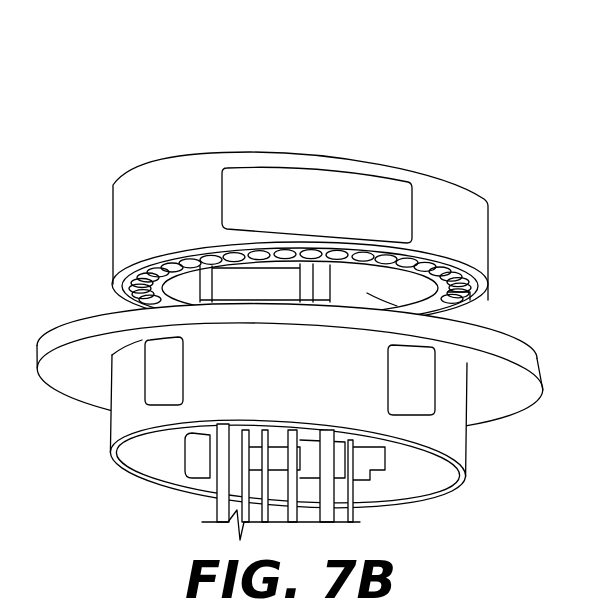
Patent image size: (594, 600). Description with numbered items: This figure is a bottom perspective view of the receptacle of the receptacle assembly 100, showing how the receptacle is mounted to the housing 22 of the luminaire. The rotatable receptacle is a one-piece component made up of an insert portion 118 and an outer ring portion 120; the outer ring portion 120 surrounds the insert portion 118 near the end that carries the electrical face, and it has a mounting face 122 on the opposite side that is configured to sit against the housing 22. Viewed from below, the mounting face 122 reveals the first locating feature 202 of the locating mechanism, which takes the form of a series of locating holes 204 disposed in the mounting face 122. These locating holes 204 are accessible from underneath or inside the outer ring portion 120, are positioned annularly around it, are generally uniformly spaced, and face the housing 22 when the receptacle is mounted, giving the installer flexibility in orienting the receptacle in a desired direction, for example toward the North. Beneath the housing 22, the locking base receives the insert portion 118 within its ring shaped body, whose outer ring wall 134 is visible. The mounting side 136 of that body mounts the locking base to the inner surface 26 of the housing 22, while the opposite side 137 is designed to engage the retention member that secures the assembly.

The receptacle assembly 100 is at (148, 68).
The outer ring portion 120 is at (185, 172).
The first locating feature 202 is at (136, 274).
The locating holes 204 is at (388, 276).
The mounting face 122 is at (480, 308).
The housing 22 is at (497, 338).
The inner surface 26 is at (523, 405).
The outer ring wall 134 is at (455, 443).
The opposite side 137 is at (112, 444).
The mounting side 136 is at (127, 352).
The insert portion 118 is at (372, 296).